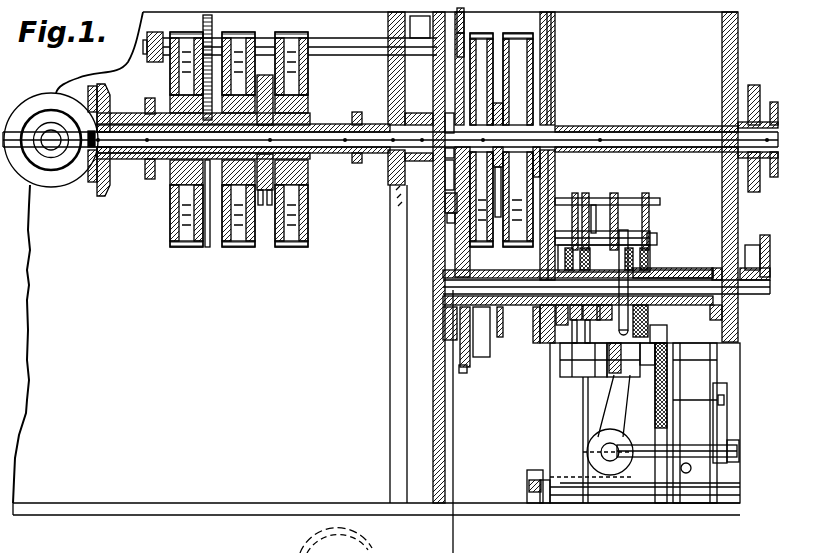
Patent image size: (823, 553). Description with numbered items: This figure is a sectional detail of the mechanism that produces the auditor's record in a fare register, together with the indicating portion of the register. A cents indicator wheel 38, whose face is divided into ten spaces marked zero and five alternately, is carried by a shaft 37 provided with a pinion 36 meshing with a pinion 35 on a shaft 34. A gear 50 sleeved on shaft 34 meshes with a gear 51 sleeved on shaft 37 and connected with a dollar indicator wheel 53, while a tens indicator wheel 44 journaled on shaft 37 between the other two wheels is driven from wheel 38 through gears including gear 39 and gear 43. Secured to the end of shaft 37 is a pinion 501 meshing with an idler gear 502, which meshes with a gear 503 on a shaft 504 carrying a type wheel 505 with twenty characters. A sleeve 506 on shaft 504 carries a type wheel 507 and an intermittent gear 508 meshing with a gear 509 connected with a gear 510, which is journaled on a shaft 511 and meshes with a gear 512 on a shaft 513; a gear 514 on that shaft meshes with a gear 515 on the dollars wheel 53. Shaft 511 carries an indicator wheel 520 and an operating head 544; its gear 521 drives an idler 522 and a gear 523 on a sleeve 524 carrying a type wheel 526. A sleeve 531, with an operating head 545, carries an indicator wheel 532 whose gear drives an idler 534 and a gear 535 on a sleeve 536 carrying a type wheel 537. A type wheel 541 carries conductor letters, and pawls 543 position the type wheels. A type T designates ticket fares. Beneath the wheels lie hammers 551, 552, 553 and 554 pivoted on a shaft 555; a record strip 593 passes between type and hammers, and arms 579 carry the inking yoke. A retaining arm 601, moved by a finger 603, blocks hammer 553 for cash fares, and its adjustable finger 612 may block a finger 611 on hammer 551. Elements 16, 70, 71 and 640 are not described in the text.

The section line 16 is at (435, 539).
The shaft 34 is at (61, 128).
The pinion 35 is at (65, 167).
The pinion 36 is at (90, 175).
The shaft 37 is at (343, 154).
The indicator wheel 38 is at (303, 248).
The gear 39 is at (269, 206).
The gear 43 is at (260, 206).
The tens indicator wheel 44 is at (232, 250).
The gear 50 is at (29, 100).
The gear 51 is at (100, 186).
The dollar indicator wheel 53 is at (187, 248).
The collar 70 is at (357, 112).
The collar 71 is at (150, 181).
The type T is at (668, 350).
The pinion 501 is at (436, 160).
The idler gear 502 is at (442, 222).
The gear 503 is at (445, 273).
The shaft 504 is at (445, 298).
The type wheel 505 is at (605, 198).
The sleeve 506 is at (469, 365).
The type wheel 507 is at (594, 230).
The intermittent gear 508 is at (460, 352).
The gear 509 is at (472, 60).
The gear 510 is at (455, 90).
The shaft 511 is at (577, 134).
The gear 512 is at (456, 52).
The shaft 513 is at (332, 46).
The gear 514 is at (213, 22).
The gear 515 is at (207, 248).
The indicator wheel 520 is at (516, 35).
The gear 521 is at (555, 76).
The idler 522 is at (437, 213).
The gear 523 is at (499, 340).
The sleeve 524 is at (505, 335).
The type wheel 526 is at (568, 390).
The sleeve 531 is at (640, 128).
The indicator wheel 532 is at (555, 56).
The idler 534 is at (556, 174).
The gear 535 is at (555, 97).
The sleeve 536 is at (537, 340).
The type wheel 537 is at (565, 362).
The type wheel 541 is at (653, 262).
The pawls 543 is at (585, 200).
The operating head 544 is at (773, 101).
The operating head 545 is at (754, 85).
The hammer 551 is at (593, 369).
The hammer 552 is at (765, 234).
The hammer 553 is at (722, 346).
The hammer 554 is at (665, 352).
The shaft 555 is at (660, 420).
The arms 579 is at (720, 437).
The record strip 593 is at (651, 337).
The retaining arm 601 is at (739, 452).
The finger 603 is at (660, 495).
The finger 611 is at (612, 402).
The adjustable finger 612 is at (600, 430).
The plate 640 is at (672, 276).